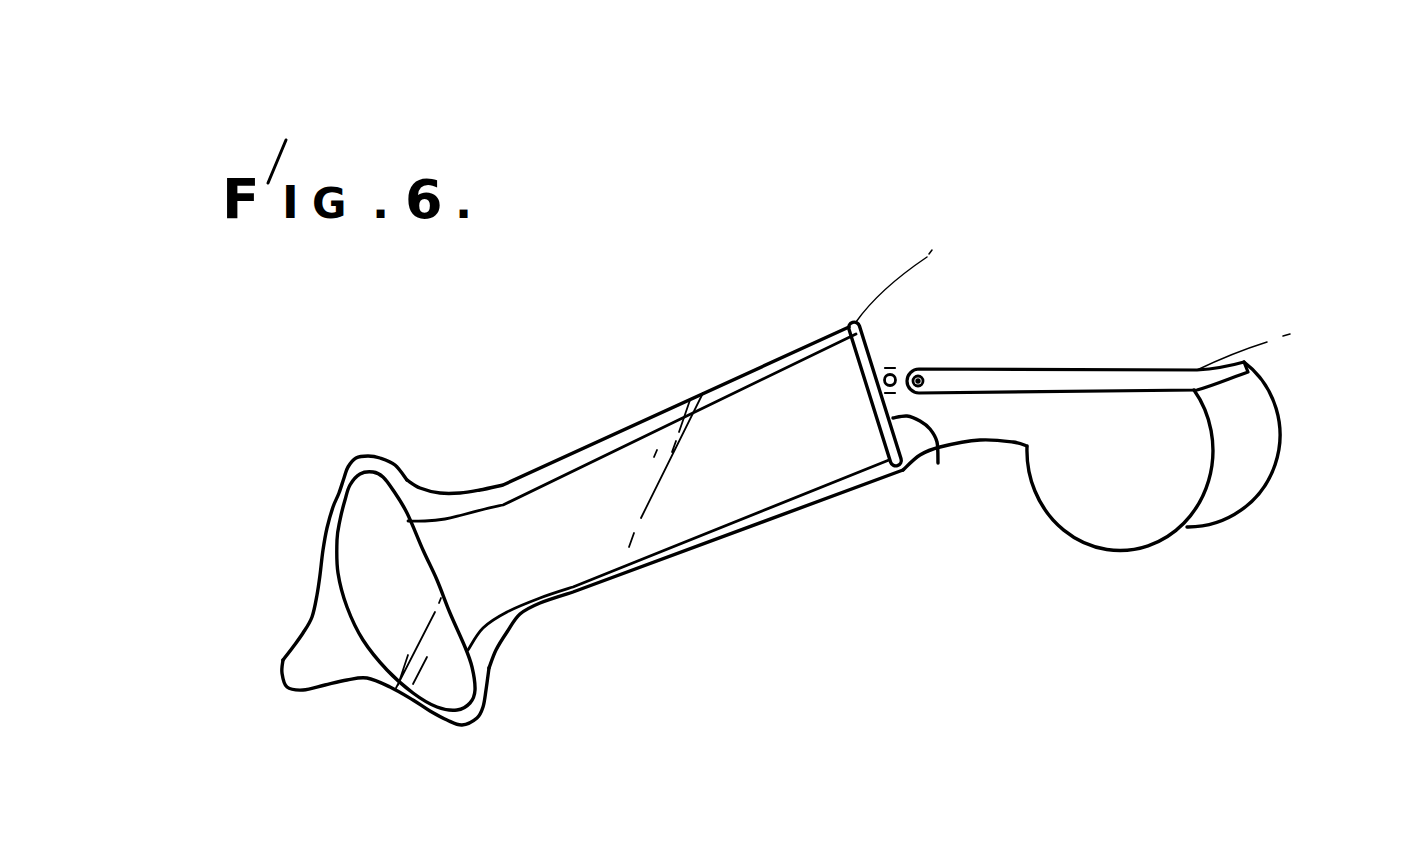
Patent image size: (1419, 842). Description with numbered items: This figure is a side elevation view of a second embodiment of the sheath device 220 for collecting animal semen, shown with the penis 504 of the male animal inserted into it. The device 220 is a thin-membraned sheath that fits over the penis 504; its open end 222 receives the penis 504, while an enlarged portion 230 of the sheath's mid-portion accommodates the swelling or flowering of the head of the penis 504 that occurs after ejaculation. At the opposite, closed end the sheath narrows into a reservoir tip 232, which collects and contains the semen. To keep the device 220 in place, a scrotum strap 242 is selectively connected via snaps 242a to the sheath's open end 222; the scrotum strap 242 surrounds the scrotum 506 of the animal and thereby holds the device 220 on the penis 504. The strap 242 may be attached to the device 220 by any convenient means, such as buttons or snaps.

The sheath device 220 is at (559, 439).
The open end 222 is at (938, 463).
The enlarged portion 230 is at (357, 455).
The reservoir tip 232 is at (281, 661).
The scrotum strap 242 is at (1080, 378).
The snaps 242a is at (908, 351).
The penis 504 is at (507, 610).
The scrotum 506 is at (1257, 460).